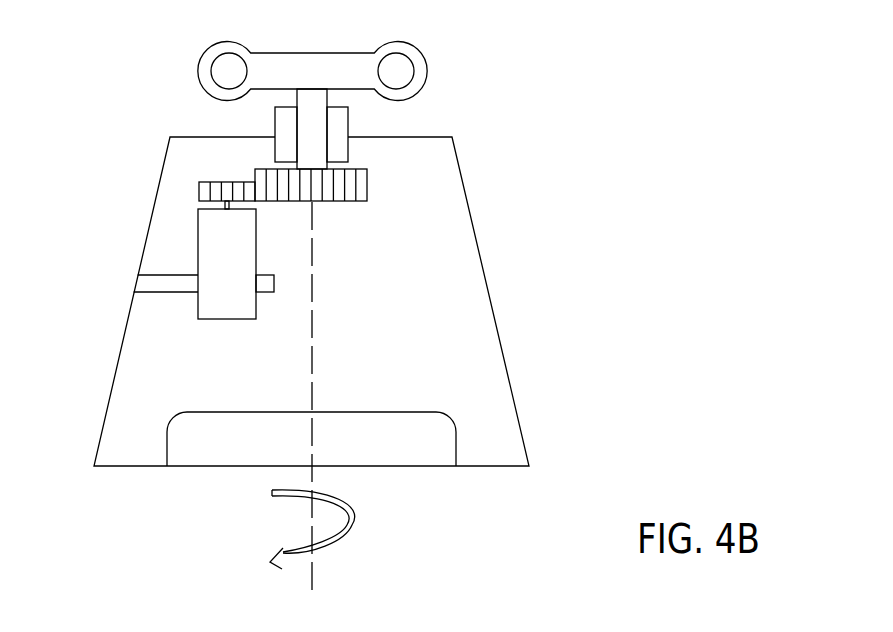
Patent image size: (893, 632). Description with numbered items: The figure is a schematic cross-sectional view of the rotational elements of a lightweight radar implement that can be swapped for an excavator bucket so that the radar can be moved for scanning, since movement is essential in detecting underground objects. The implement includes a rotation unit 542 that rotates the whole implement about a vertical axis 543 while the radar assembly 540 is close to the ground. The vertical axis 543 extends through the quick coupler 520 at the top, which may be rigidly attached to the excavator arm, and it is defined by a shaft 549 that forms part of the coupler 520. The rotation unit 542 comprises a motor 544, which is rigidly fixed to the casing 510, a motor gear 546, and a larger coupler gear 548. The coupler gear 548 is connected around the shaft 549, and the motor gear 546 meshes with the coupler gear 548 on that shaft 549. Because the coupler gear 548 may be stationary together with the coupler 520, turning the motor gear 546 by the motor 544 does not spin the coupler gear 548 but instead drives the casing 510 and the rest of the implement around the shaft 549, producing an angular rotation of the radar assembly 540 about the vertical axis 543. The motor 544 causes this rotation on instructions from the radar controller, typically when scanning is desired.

The casing 510 is at (157, 190).
The quick coupler 520 is at (323, 53).
The radar assembly 540 is at (388, 468).
The rotation unit 542 is at (180, 303).
The vertical axis 543 is at (310, 520).
The motor 544 is at (207, 252).
The motor gear 546 is at (222, 187).
The coupler gear 548 is at (367, 185).
The shaft 549 is at (317, 125).